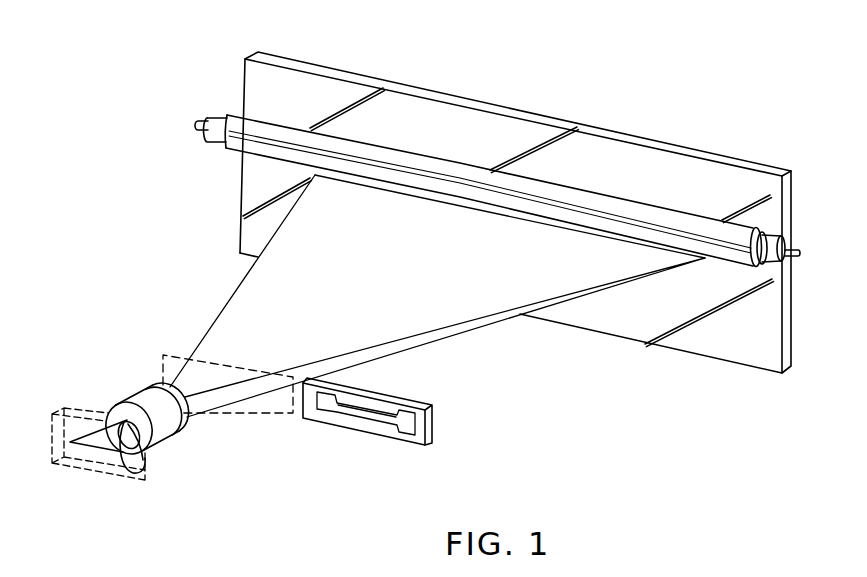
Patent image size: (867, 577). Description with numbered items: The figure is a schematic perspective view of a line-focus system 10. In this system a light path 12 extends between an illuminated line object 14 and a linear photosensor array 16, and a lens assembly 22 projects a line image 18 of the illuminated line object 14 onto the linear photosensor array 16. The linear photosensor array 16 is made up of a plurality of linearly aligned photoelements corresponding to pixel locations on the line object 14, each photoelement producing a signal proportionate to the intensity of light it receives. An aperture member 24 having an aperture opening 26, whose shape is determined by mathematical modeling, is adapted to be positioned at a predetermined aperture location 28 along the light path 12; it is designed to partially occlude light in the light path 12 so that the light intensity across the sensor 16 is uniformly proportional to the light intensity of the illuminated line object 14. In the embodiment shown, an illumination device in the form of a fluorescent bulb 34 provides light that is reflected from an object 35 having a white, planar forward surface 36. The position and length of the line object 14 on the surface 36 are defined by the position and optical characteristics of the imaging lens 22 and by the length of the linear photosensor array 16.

The line-focus system 10 is at (227, 40).
The light path 12 is at (337, 290).
The illuminated line object 14 is at (545, 223).
The linear photosensor array 16 is at (112, 455).
The line image 18 is at (145, 458).
The lens assembly 22 is at (137, 402).
The aperture member 24 is at (437, 420).
The aperture opening 26 is at (403, 425).
The aperture location 28 is at (177, 354).
The fluorescent bulb 34 is at (270, 133).
The object 35 is at (788, 342).
The forward surface 36 is at (708, 176).